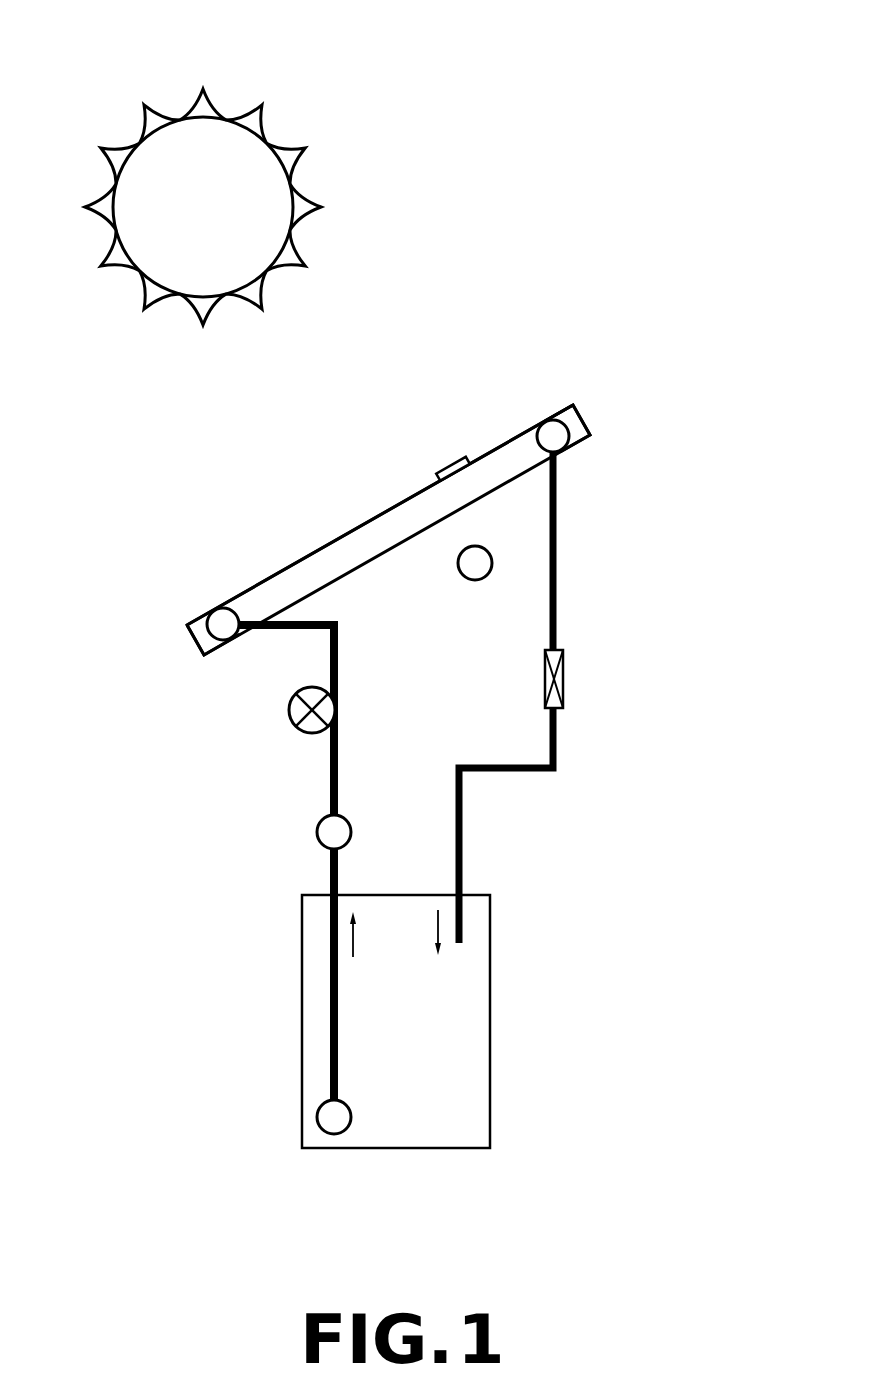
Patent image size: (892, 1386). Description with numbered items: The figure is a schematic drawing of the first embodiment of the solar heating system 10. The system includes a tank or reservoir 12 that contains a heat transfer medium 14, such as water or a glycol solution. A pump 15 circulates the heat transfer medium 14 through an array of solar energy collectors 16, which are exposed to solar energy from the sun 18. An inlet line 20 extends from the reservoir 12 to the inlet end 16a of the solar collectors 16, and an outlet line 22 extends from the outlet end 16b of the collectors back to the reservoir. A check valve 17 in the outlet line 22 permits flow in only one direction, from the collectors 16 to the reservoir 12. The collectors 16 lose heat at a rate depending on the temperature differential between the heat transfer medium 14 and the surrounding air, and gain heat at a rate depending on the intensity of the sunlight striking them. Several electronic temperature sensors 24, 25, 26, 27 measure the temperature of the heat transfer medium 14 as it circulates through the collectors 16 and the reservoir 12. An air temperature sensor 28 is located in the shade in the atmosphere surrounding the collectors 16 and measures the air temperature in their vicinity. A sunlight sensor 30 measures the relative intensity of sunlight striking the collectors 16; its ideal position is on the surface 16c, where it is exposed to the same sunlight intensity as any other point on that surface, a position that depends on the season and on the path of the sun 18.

The solar heating system 10 is at (592, 1077).
The tank or reservoir 12 is at (502, 977).
The heat transfer medium 14 is at (408, 1105).
The pump 15 is at (280, 708).
The array of solar energy collectors 16 is at (280, 593).
The inlet end 16a is at (185, 638).
The outlet end 16b is at (590, 422).
The surface 16c is at (383, 508).
The check valve 17 is at (575, 680).
The sun 18 is at (203, 82).
The inlet line 20 is at (322, 767).
The outlet line 22 is at (566, 502).
The electronic temperature sensor 24 is at (310, 1115).
The electronic temperature sensor 25 is at (308, 832).
The electronic temperature sensor 26 is at (224, 600).
The electronic temperature sensor 27 is at (555, 412).
The air temperature sensor 28 is at (457, 592).
The sunlight sensor 30 is at (455, 456).